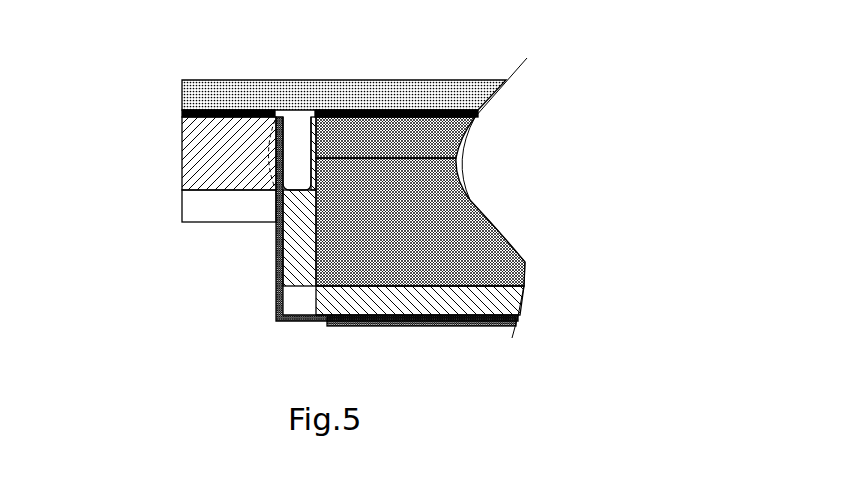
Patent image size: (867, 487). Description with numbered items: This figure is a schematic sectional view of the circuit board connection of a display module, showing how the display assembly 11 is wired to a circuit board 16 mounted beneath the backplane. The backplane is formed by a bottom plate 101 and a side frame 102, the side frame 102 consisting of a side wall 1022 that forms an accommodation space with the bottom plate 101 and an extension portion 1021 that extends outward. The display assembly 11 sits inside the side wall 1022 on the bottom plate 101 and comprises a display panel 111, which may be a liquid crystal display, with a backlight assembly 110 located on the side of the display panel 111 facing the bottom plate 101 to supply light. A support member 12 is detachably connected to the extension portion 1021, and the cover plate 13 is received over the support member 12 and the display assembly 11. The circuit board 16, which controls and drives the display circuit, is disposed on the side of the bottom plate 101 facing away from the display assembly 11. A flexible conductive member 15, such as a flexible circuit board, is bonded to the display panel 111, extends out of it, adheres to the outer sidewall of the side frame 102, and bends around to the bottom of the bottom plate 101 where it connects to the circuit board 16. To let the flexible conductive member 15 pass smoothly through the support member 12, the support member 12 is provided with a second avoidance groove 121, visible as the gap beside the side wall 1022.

The display assembly 11 is at (460, 201).
The backlight assembly 110 is at (465, 210).
The display panel 111 is at (455, 137).
The support member 12 is at (196, 142).
The second avoidance groove 121 is at (292, 110).
The cover plate 13 is at (228, 96).
The flexible conductive member 15 is at (275, 314).
The circuit board 16 is at (352, 314).
The bottom plate 101 is at (440, 315).
The side frame 102 is at (182, 205).
The extension portion 1021 is at (200, 208).
The side wall 1022 is at (295, 262).